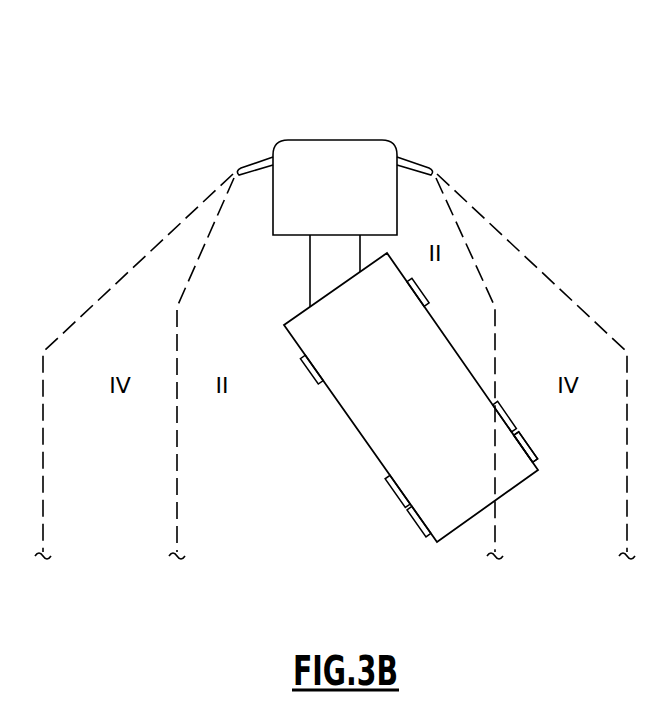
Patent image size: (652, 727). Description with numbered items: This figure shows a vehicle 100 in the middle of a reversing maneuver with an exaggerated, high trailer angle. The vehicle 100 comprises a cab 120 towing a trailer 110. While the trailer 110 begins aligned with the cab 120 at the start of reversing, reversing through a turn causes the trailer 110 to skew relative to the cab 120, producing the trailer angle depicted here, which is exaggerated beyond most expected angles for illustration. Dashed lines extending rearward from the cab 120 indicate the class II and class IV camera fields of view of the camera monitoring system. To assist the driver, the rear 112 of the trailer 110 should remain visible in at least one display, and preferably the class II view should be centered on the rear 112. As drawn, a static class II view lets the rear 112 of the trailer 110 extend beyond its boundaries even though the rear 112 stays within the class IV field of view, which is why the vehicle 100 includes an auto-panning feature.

The vehicle 100 is at (373, 107).
The trailer 110 is at (428, 402).
The rear of the trailer 112 is at (520, 483).
The cab 120 is at (359, 202).